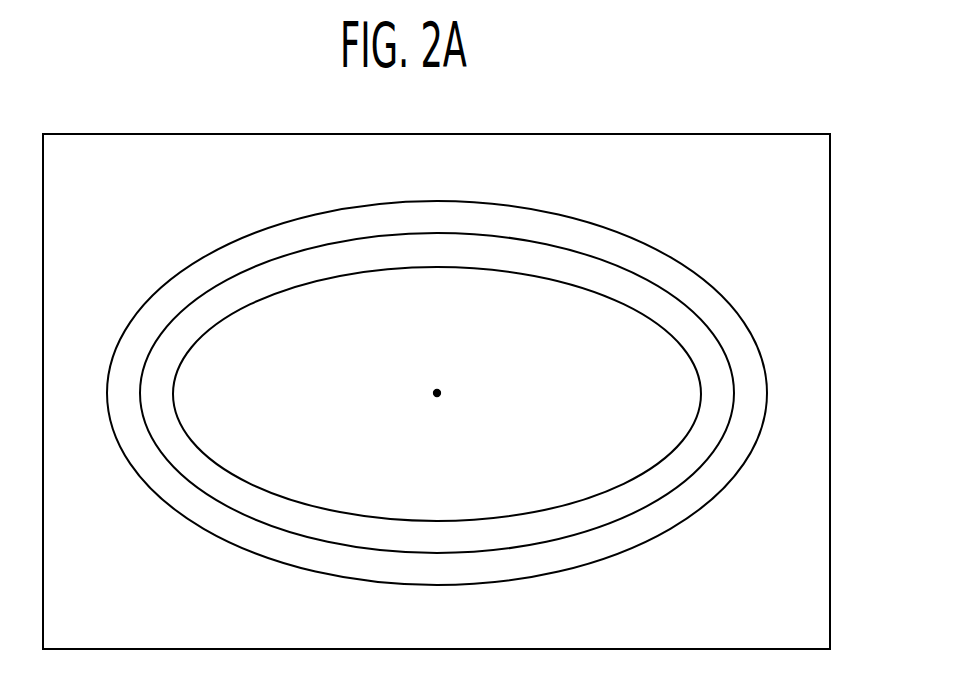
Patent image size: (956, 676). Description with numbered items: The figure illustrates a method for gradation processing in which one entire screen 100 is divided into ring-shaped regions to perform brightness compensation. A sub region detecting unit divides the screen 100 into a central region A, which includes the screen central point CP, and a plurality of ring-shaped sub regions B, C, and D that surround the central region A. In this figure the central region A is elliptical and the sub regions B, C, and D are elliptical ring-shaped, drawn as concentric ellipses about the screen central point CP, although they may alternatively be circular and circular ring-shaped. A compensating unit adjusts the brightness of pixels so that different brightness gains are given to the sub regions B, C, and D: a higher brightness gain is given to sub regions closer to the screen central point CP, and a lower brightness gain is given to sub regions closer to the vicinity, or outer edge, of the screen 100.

The screen 100 is at (725, 134).
The sub region D is at (437, 393).
The sub region C is at (437, 391).
The sub region B is at (437, 389).
The central region A is at (537, 305).
The screen central point CP is at (436, 415).